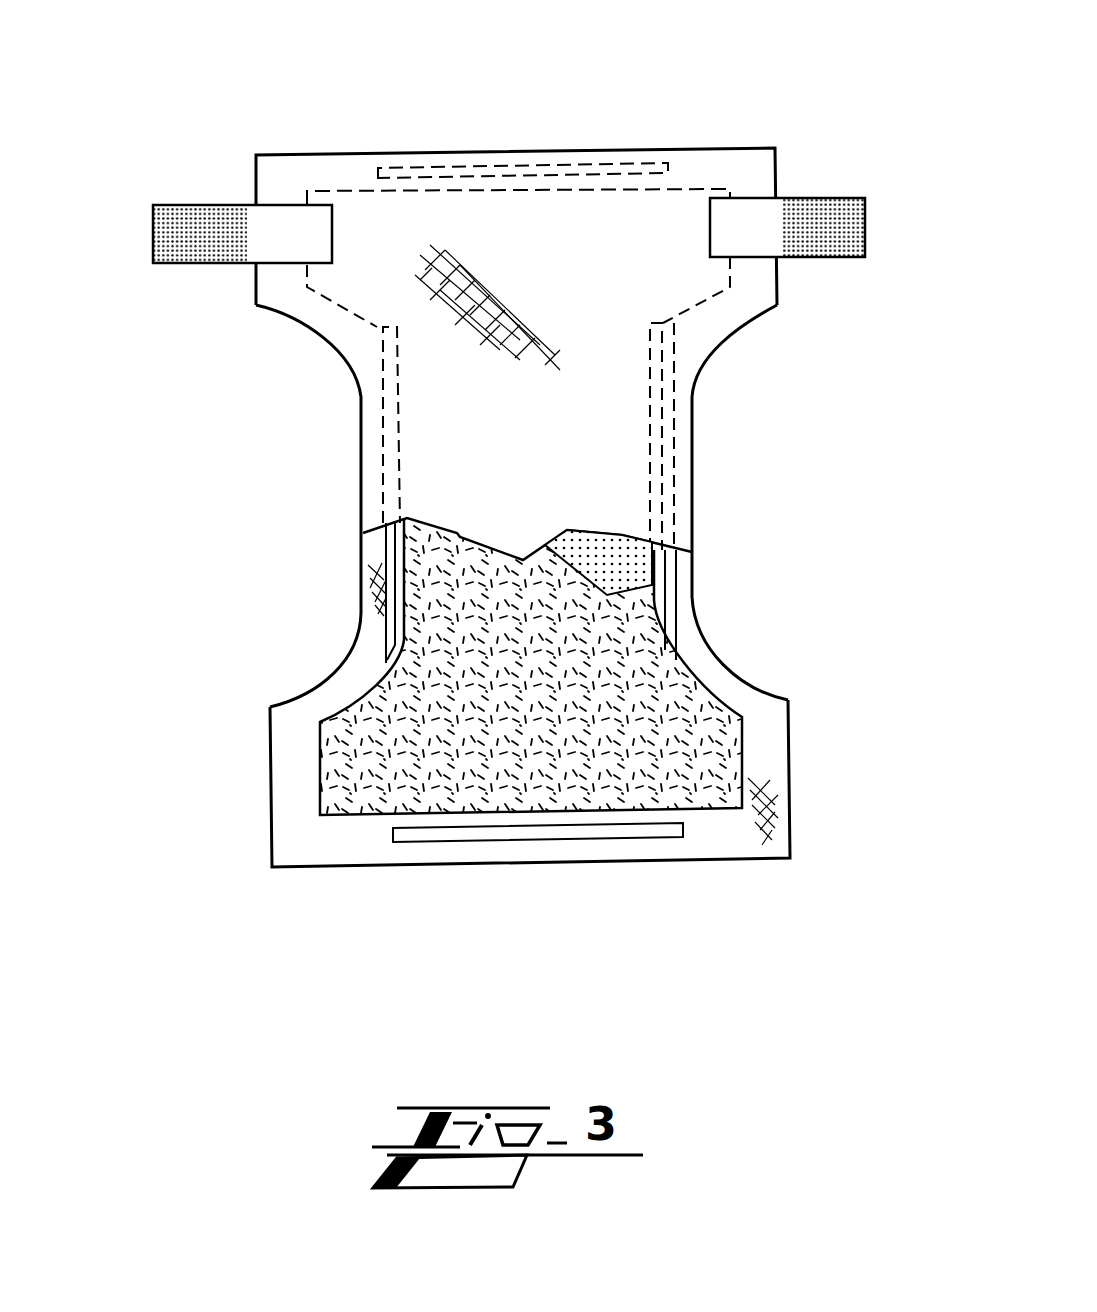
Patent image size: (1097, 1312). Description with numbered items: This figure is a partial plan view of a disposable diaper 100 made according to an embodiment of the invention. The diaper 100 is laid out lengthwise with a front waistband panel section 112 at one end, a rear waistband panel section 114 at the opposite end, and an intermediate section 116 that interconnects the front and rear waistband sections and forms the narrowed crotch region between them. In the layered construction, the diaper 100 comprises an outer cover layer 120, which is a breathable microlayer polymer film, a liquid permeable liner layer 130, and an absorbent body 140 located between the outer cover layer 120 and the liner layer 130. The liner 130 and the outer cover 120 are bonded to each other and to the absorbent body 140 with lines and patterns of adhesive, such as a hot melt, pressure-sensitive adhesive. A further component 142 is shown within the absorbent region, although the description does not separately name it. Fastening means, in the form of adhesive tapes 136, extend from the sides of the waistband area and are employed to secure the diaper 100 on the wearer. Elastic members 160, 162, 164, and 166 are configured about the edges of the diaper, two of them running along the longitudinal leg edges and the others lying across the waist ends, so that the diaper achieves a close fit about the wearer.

The disposable diaper 100 is at (654, 92).
The front waistband panel section 112 is at (272, 867).
The rear waistband panel section 114 is at (256, 155).
The intermediate section 116 is at (360, 460).
The outer cover layer 120 is at (773, 705).
The liquid permeable liner layer 130 is at (717, 322).
The adhesive tapes 136 is at (153, 238).
The absorbent body 140 is at (570, 735).
The acquisition layer 142 is at (600, 530).
The elastic member 160 is at (385, 595).
The elastic member 162 is at (678, 614).
The elastic member 164 is at (527, 842).
The elastic member 166 is at (560, 147).